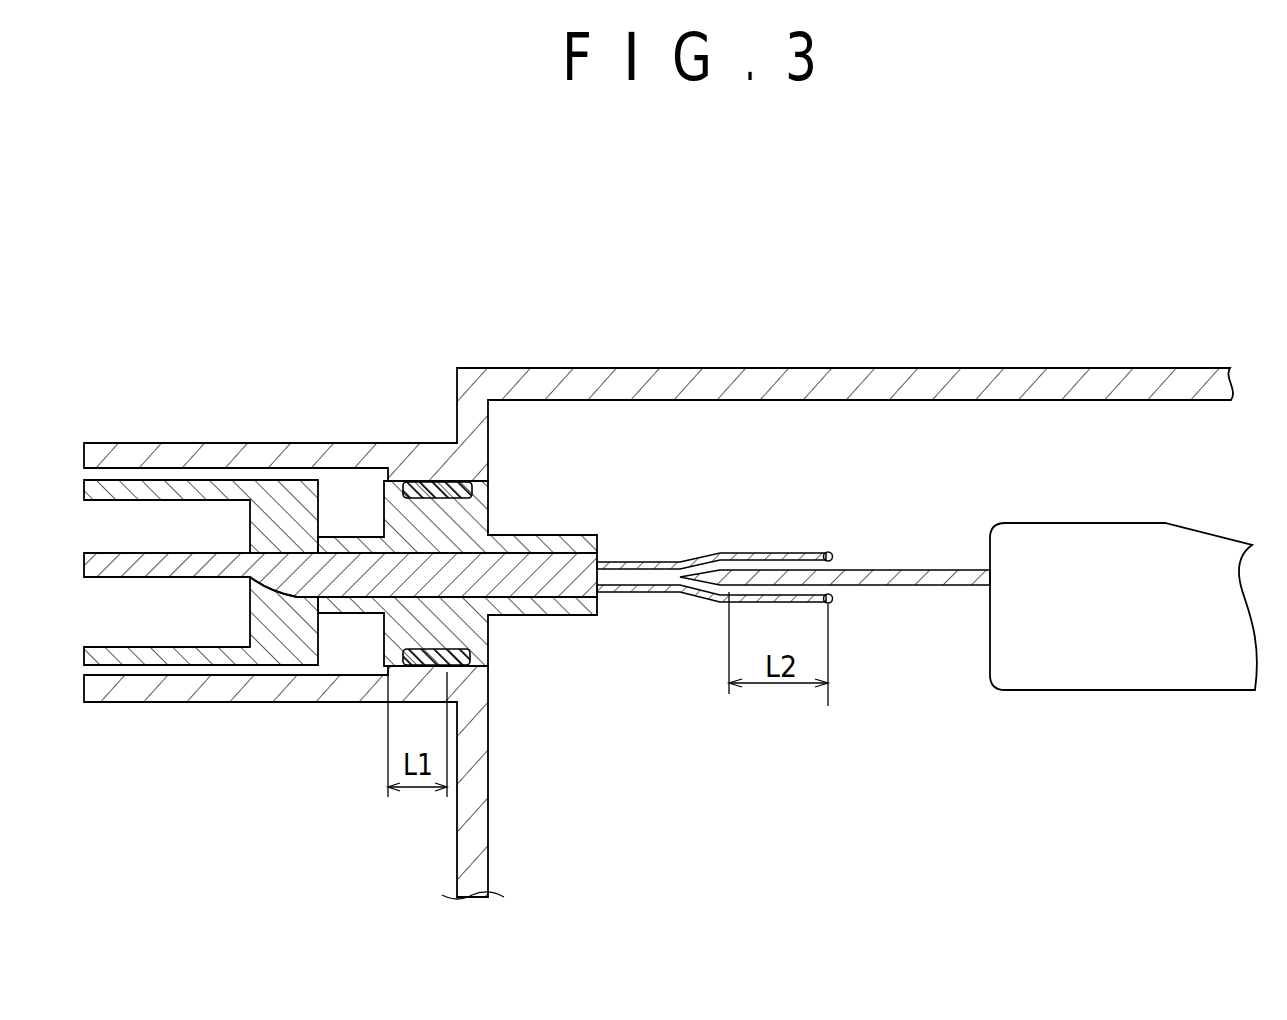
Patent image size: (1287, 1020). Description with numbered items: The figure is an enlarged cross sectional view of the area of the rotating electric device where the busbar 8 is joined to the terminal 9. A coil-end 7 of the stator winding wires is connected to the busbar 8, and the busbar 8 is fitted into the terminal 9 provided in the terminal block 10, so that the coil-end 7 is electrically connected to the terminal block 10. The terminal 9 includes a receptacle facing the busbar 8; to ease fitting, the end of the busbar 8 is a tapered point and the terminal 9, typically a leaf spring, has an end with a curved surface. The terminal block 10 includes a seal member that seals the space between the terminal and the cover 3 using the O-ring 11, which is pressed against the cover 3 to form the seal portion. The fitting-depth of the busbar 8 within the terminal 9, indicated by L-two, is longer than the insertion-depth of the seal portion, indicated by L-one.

The cover 3 is at (988, 378).
The coil-end 7 is at (1132, 673).
The busbar 8 is at (942, 588).
The terminal 9 is at (540, 580).
The terminal block 10 is at (280, 485).
The O-ring 11 is at (423, 478).